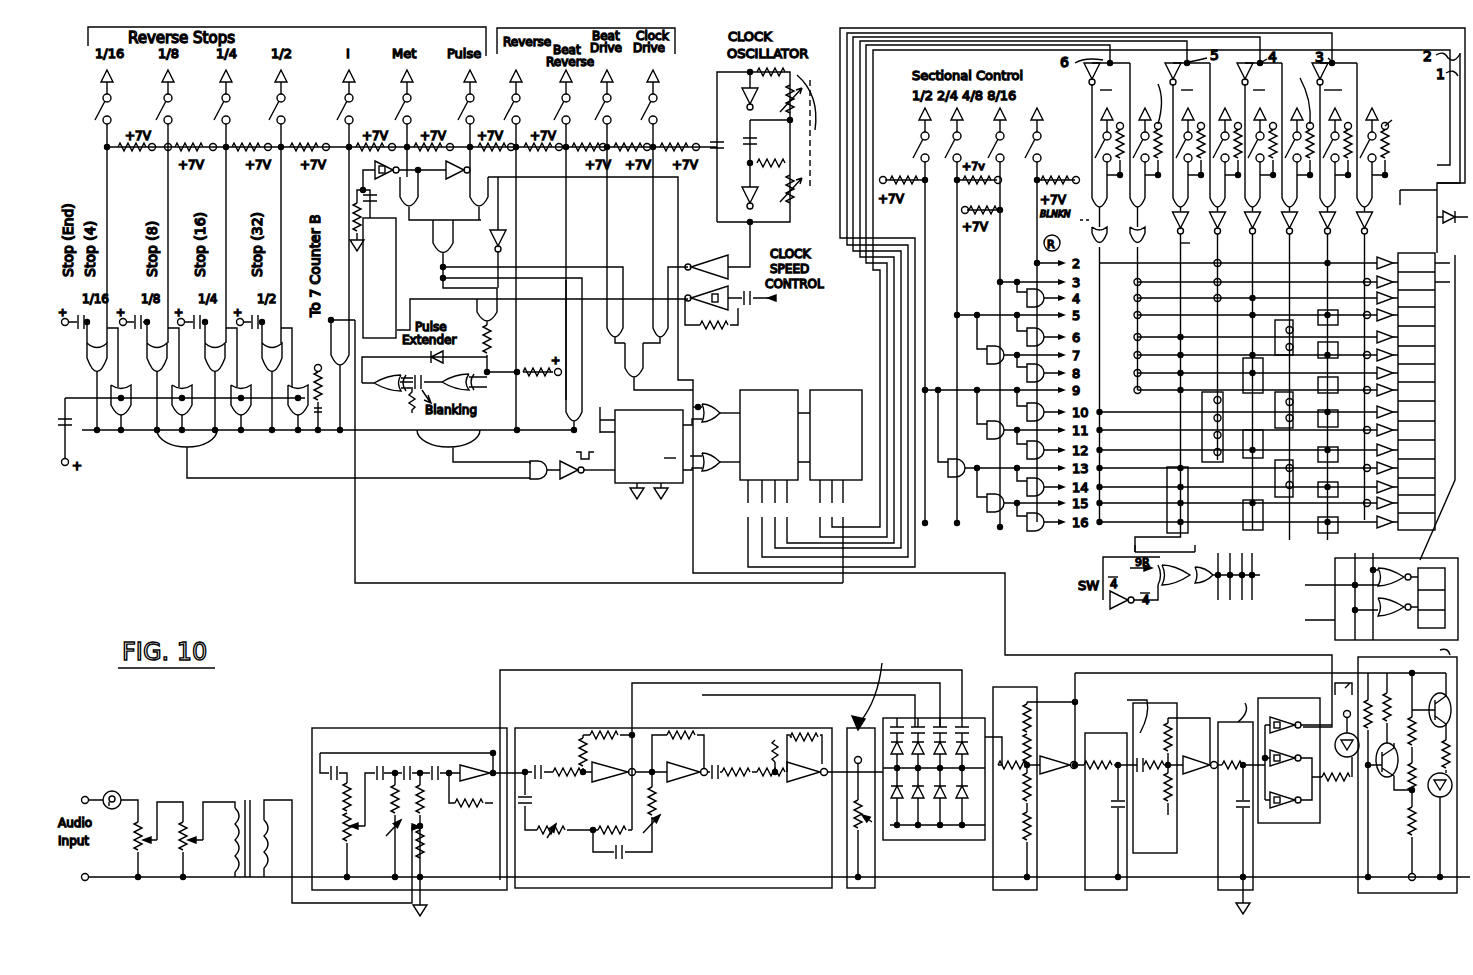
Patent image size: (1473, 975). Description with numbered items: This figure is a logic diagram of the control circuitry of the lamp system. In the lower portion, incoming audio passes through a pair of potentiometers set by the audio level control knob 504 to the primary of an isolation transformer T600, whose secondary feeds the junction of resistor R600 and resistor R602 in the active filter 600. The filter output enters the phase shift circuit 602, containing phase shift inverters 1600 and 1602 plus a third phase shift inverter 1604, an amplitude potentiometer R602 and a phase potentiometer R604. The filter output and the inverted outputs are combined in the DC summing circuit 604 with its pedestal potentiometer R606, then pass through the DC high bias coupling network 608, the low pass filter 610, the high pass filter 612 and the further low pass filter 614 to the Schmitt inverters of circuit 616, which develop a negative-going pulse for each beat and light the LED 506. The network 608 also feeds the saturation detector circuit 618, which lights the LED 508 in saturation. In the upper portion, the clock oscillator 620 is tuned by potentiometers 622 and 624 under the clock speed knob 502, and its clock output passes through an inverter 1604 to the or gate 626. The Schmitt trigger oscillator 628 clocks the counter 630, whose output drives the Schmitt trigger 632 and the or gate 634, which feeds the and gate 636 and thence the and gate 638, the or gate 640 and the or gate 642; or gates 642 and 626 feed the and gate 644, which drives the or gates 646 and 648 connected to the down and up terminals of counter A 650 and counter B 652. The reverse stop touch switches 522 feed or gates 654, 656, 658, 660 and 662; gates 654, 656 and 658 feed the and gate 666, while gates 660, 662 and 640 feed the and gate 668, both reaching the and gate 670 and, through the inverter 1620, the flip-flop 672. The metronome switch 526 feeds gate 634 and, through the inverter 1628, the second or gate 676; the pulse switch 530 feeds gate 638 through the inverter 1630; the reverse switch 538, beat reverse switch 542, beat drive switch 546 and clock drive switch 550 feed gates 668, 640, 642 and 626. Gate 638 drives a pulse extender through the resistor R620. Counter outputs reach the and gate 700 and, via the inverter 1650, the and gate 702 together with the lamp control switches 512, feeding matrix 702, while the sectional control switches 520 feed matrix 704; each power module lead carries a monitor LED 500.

The reverse stop touch switches 522 is at (341, 111).
The metronome touch switch 526 is at (399, 112).
The pulse touch switch 530 is at (462, 112).
The reverse switch 538 is at (512, 110).
The beat reverse touch switch 542 is at (562, 110).
The beat drive touch switch 546 is at (603, 110).
The clock drive switch 550 is at (649, 110).
The clock oscillator 620 is at (717, 80).
The potentiometer 622 is at (785, 80).
The potentiometer 624 is at (780, 215).
The clock speed control knob 502 is at (810, 135).
The sectional control switches 520 is at (915, 150).
The lamp control touch switches 512 is at (1090, 162).
The inverter 1650 is at (1328, 85).
The LED 500 is at (1448, 215).
The and gate 700 is at (1358, 214).
The matrix 702 is at (1297, 216).
The matrix 704 is at (947, 500).
The Schmitt trigger 632 is at (365, 170).
The inverter 1628 is at (446, 182).
The or gate 634 is at (440, 198).
The second or gate 676 is at (488, 197).
The inverter 1630 is at (504, 246).
The and gate 636 is at (465, 254).
The counter 630 is at (385, 290).
The and gate 638 is at (477, 300).
The resistor R620 is at (492, 336).
The inverter 1604 is at (722, 267).
The Schmitt trigger oscillator 628 is at (738, 322).
The or gate 642 is at (625, 328).
The or gate 626 is at (672, 338).
The and gate 644 is at (625, 366).
The or gate 640 is at (566, 410).
The or gate 646 is at (712, 400).
The or gate 648 is at (716, 474).
The up-down counter A 650 is at (772, 397).
The up-down counter B 652 is at (832, 397).
The or gate 654 is at (93, 378).
The or gate 656 is at (150, 378).
The or gate 658 is at (213, 378).
The or gate 660 is at (270, 378).
The or gate 662 is at (336, 385).
The and gate 666 is at (182, 413).
The and gate 668 is at (428, 432).
The and gate 670 is at (540, 483).
The inverter 1620 is at (571, 480).
The flip-flop 672 is at (627, 485).
The active filter 600 is at (318, 745).
The audio level control knob 504 is at (197, 862).
The isolation transformer T600 is at (246, 878).
The resistor R602 is at (425, 805).
The resistor R600 is at (427, 852).
The phase shift inverter 1600 is at (609, 783).
The phase shift inverter 1602 is at (676, 785).
The phase potentiometer R604 is at (552, 832).
The pedestal potentiometer R606 is at (868, 832).
The phase shift circuit 602 is at (727, 799).
The DC summing circuit 604 is at (974, 862).
The DC high bias coupling network 608 is at (1011, 885).
The low pass filter 610 is at (1107, 884).
The high pass filter 612 is at (1157, 853).
The low pass filter 614 is at (1236, 885).
The Schmitt inverter circuit 616 is at (1288, 823).
The LED 506 is at (1347, 785).
The LED 508 is at (1427, 790).
The saturation detector circuit 618 is at (1407, 794).